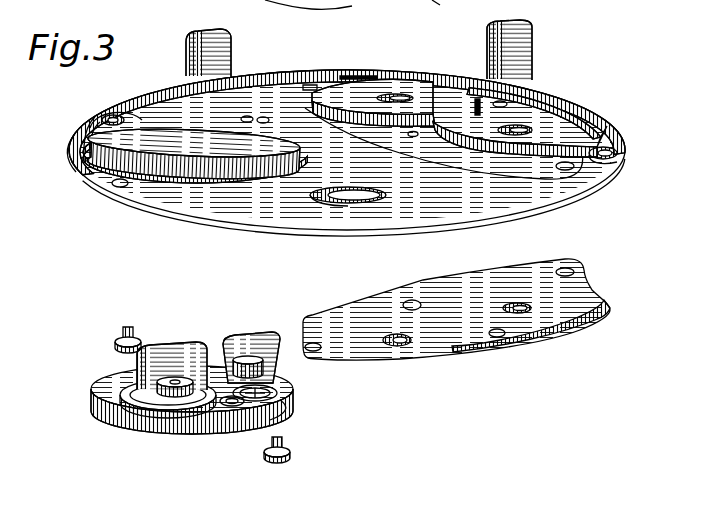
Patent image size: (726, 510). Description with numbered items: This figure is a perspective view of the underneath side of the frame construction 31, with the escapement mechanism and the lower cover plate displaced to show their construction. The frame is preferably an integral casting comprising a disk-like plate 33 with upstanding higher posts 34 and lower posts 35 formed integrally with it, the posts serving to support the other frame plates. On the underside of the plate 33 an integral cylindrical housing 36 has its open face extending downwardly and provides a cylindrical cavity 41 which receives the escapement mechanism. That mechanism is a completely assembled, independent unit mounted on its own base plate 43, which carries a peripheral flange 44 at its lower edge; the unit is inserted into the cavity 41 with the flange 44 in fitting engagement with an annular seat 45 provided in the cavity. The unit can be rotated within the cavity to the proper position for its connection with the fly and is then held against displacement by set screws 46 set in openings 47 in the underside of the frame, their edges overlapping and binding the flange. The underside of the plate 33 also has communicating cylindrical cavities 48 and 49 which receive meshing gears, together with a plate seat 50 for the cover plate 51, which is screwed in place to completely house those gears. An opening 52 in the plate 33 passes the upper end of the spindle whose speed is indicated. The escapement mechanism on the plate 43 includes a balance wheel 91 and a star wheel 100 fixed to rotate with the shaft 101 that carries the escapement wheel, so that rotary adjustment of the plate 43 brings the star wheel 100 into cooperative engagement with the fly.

The frame construction 31 is at (447, 0).
The disk-like plate 33 is at (464, 213).
The higher posts 34 is at (512, 43).
The lower posts 35 is at (212, 46).
The cylindrical housing 36 is at (180, 158).
The cylindrical cavity 41 is at (80, 166).
The base plate 43 is at (215, 433).
The peripheral flange 44 is at (289, 421).
The annular seat 45 is at (247, 182).
The set screws 46 is at (138, 336).
The openings 47 is at (243, 116).
The cylindrical cavity 48 is at (438, 92).
The cylindrical cavity 49 is at (578, 128).
The plate seat 50 is at (558, 170).
The cover plate 51 is at (580, 300).
The opening 52 is at (365, 203).
The balance wheel 91 is at (135, 375).
The star wheel 100 is at (262, 377).
The shaft 101 is at (273, 394).